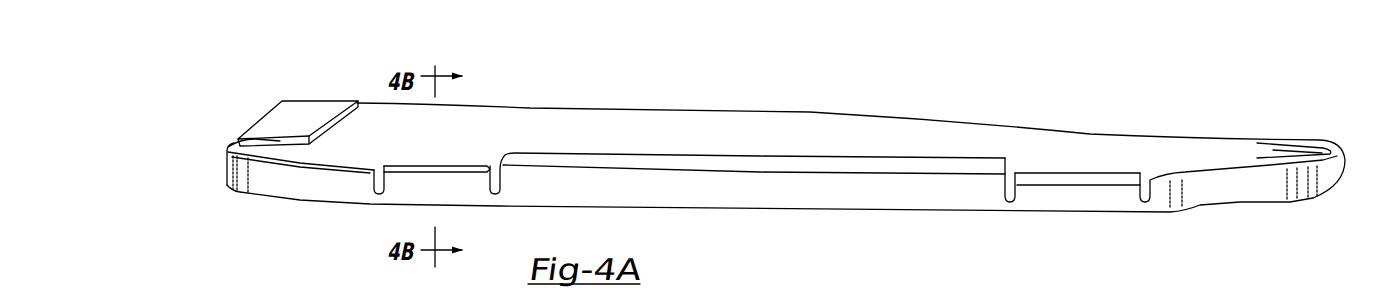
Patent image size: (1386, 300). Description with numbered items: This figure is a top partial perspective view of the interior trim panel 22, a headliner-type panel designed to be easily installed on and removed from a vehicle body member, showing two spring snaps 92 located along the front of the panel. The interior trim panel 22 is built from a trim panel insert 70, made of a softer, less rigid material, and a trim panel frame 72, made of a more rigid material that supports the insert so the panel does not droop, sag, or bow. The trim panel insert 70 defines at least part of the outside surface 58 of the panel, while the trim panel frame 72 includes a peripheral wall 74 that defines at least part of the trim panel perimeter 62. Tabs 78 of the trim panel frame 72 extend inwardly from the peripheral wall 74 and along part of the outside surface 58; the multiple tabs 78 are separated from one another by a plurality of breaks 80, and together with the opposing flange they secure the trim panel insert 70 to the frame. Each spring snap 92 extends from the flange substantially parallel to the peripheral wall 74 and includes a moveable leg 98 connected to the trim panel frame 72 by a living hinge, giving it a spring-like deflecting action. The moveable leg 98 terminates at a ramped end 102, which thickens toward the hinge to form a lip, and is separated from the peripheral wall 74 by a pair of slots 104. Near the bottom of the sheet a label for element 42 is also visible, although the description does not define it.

The interior trim panel 22 is at (1042, 110).
The panel 42 is at (860, 299).
The outside surface 58 is at (878, 135).
The trim panel perimeter 62 is at (223, 166).
The trim panel insert 70 is at (780, 130).
The trim panel frame 72 is at (732, 210).
The peripheral wall 74 is at (259, 176).
The tabs 78 is at (310, 105).
The breaks 80 is at (276, 140).
The spring snaps 92 is at (485, 163).
The moveable leg 98 is at (430, 185).
The ramped end 102 is at (381, 163).
The slots 104 is at (374, 186).